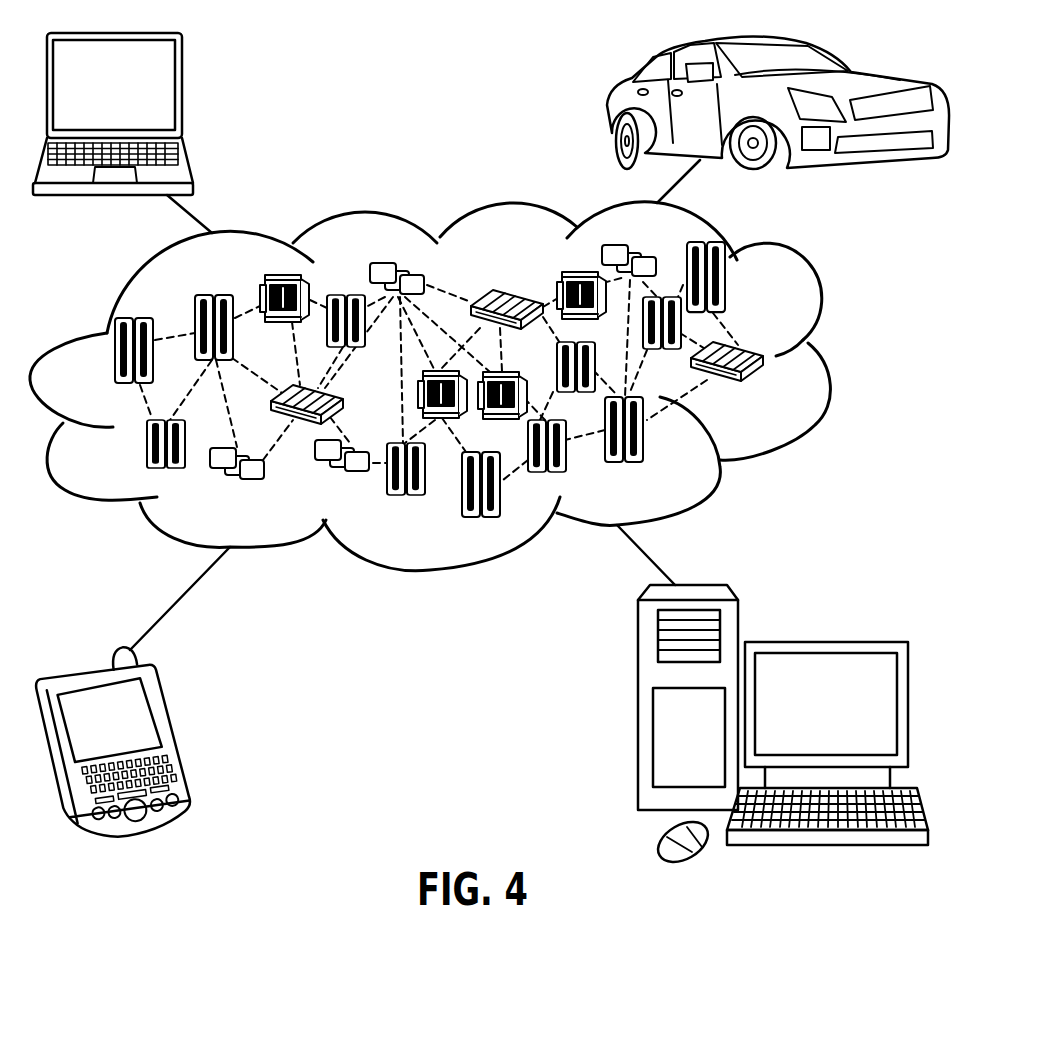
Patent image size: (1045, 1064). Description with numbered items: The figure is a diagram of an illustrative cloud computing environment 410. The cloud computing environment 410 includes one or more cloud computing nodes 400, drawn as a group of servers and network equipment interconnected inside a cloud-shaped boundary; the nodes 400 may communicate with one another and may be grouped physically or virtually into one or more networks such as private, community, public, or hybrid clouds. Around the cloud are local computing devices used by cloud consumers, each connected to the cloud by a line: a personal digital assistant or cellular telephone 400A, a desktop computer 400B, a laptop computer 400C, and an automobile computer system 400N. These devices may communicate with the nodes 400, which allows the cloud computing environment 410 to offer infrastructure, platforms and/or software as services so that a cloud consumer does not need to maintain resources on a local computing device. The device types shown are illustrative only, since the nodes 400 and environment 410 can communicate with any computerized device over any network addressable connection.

The cloud computing nodes 400 is at (766, 387).
The cloud computing environment 410 is at (825, 362).
The personal digital assistant (PDA) or cellular telephone 400A is at (172, 732).
The desktop computer 400B is at (822, 642).
The laptop computer 400C is at (183, 93).
The automobile computer system 400N is at (610, 110).